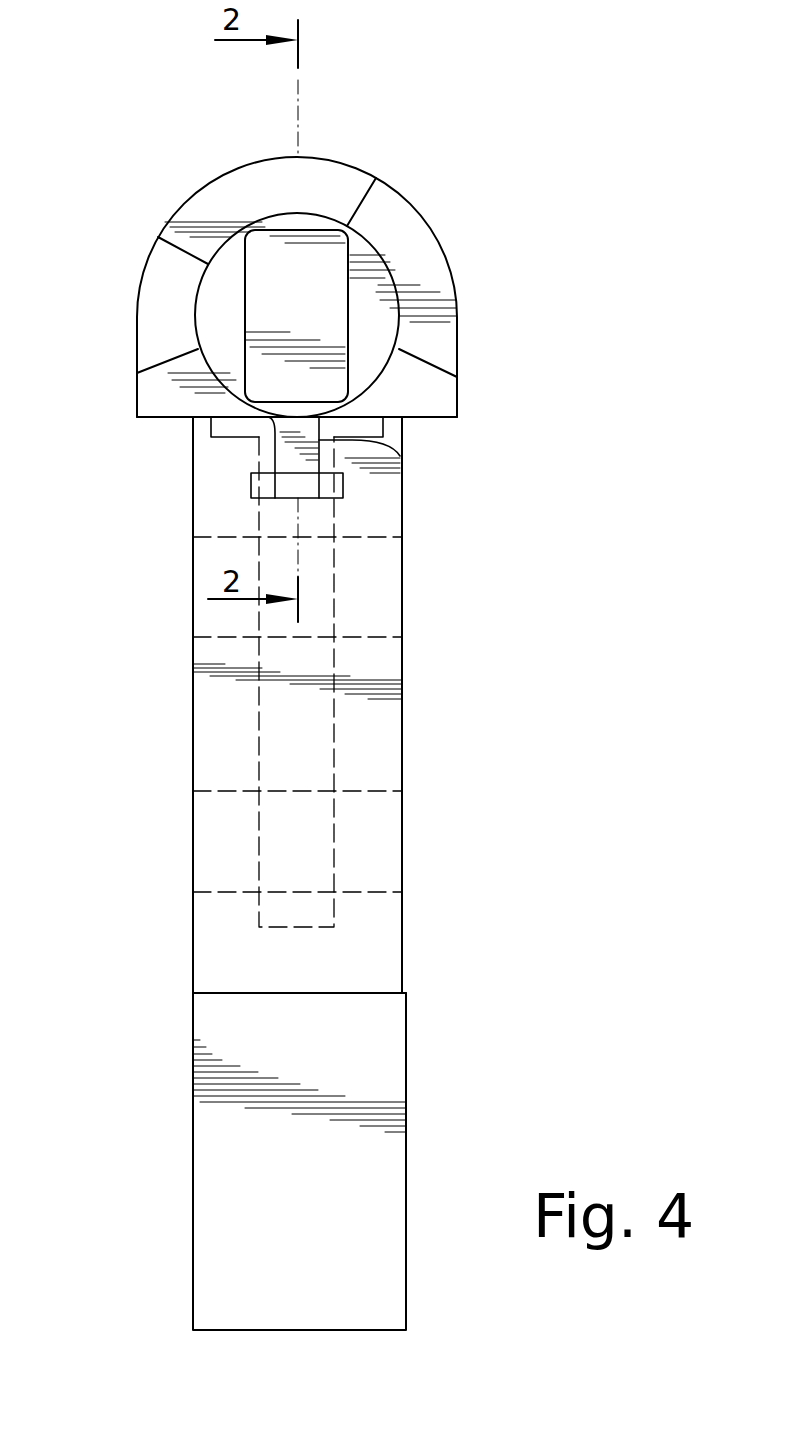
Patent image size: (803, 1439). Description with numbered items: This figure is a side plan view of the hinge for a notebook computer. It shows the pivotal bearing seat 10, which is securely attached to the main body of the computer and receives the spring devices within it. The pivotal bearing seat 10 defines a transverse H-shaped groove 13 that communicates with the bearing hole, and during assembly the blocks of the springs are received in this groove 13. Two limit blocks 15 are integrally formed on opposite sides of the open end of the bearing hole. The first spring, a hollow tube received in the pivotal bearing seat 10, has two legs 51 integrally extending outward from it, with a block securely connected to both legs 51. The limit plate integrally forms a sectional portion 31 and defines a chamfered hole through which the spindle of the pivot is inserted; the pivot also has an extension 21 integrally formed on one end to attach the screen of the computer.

The pivotal bearing seat 10 is at (382, 738).
The transverse H-shaped groove 13 is at (402, 470).
The limit blocks 15 is at (150, 402).
The extension 21 is at (267, 308).
The sectional portion 31 is at (254, 172).
The legs 51 is at (290, 460).